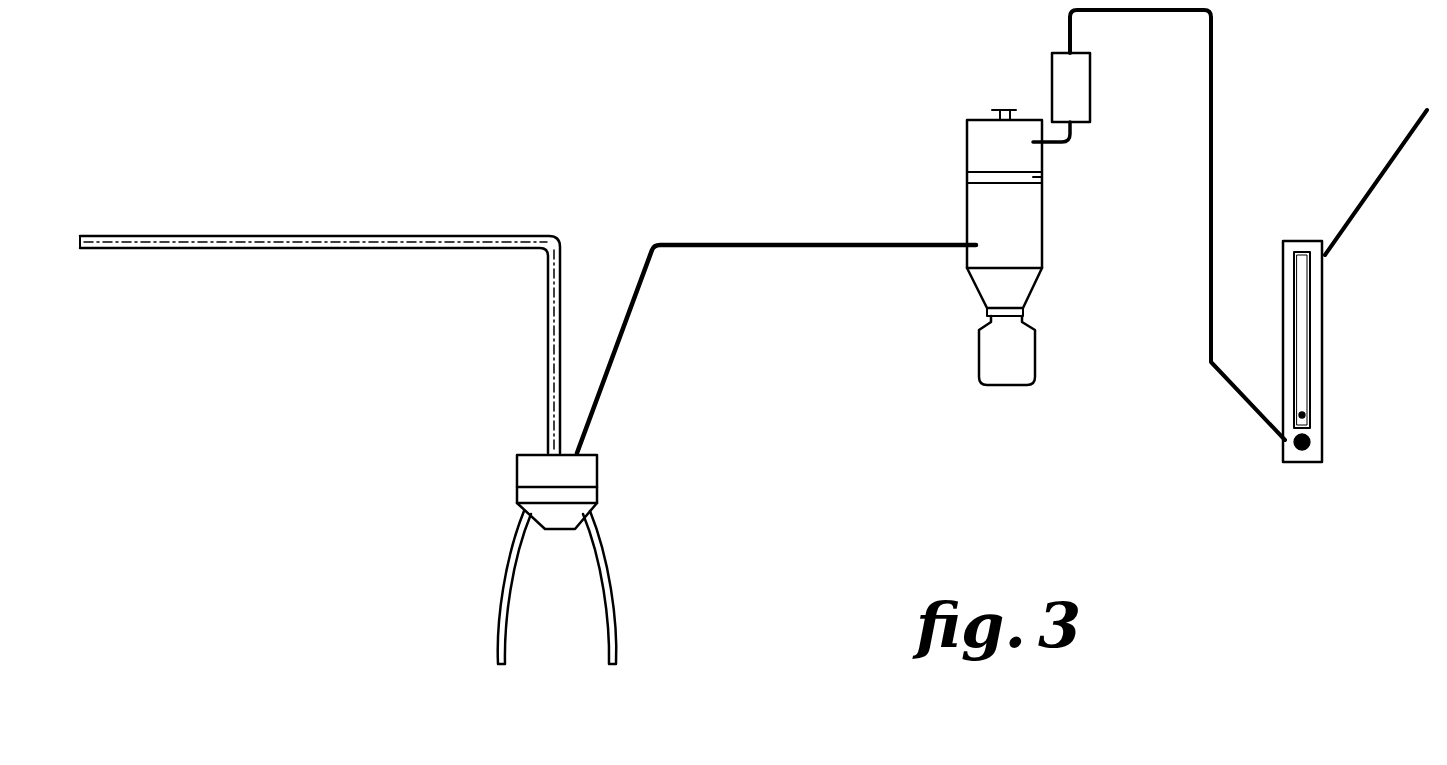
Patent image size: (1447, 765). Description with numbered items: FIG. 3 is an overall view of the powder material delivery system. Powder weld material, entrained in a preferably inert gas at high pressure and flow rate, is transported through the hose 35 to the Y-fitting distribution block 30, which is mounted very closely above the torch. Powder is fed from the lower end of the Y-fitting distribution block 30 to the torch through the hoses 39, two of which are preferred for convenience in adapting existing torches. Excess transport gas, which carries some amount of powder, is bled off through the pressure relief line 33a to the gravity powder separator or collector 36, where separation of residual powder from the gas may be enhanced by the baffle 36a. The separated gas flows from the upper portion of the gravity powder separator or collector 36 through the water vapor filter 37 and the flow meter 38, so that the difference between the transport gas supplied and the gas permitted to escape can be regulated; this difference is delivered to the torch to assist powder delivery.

The Y-fitting distribution block 30 is at (597, 470).
The pressure relief line 33a is at (730, 243).
The hose 35 is at (430, 236).
The gravity powder separator or collector 36 is at (1042, 215).
The baffle 36a is at (1033, 177).
The water vapor filter 37 is at (1090, 78).
The flow meter 38 is at (1322, 306).
The hoses 39 is at (608, 560).